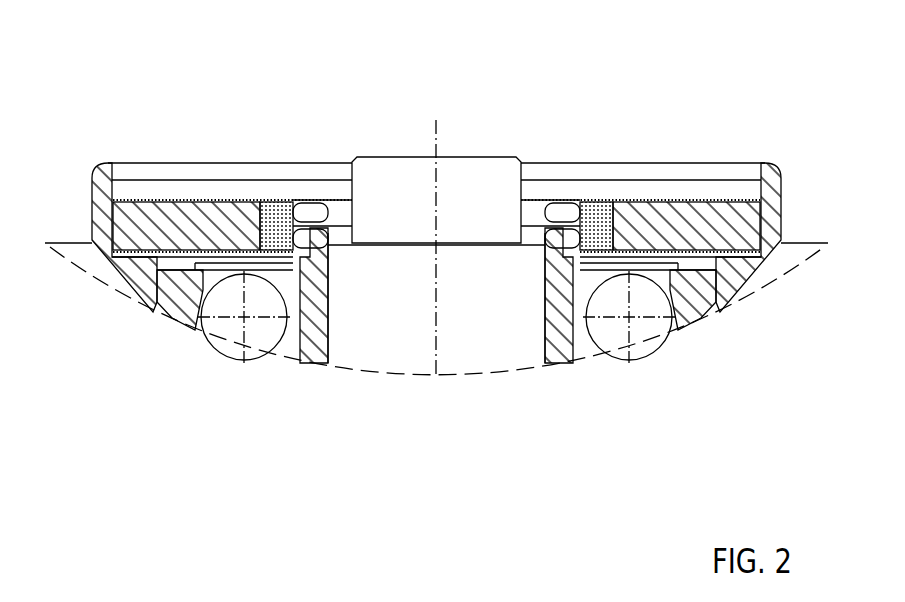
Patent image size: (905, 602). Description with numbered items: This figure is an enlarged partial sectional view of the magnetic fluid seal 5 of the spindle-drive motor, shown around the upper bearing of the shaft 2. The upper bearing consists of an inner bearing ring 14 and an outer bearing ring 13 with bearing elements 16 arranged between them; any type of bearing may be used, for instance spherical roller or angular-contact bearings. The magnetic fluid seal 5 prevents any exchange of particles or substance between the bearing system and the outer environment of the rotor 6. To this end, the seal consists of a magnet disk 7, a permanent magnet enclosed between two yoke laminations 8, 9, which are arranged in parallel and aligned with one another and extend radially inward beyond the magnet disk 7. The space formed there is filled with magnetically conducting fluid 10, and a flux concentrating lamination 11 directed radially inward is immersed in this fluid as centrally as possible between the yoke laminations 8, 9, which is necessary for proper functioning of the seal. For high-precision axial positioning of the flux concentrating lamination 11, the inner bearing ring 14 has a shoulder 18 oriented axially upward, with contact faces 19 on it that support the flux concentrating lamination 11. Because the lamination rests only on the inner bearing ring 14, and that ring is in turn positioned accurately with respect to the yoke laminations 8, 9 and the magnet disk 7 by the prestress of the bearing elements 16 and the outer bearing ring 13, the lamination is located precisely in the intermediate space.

The shaft 2 is at (462, 313).
The magnetic fluid seal 5 is at (668, 148).
The rotor 6 is at (94, 195).
The magnet disk 7 is at (190, 215).
The yoke lamination 8 is at (739, 200).
The yoke lamination 9 is at (747, 267).
The magnetically conducting fluid 10 is at (607, 200).
The flux concentrating lamination 11 is at (290, 200).
The outer bearing ring 13 is at (173, 318).
The inner bearing ring 14 is at (310, 333).
The bearing elements 16 is at (607, 307).
The shoulder 18 is at (320, 228).
The contact faces 19 is at (553, 235).